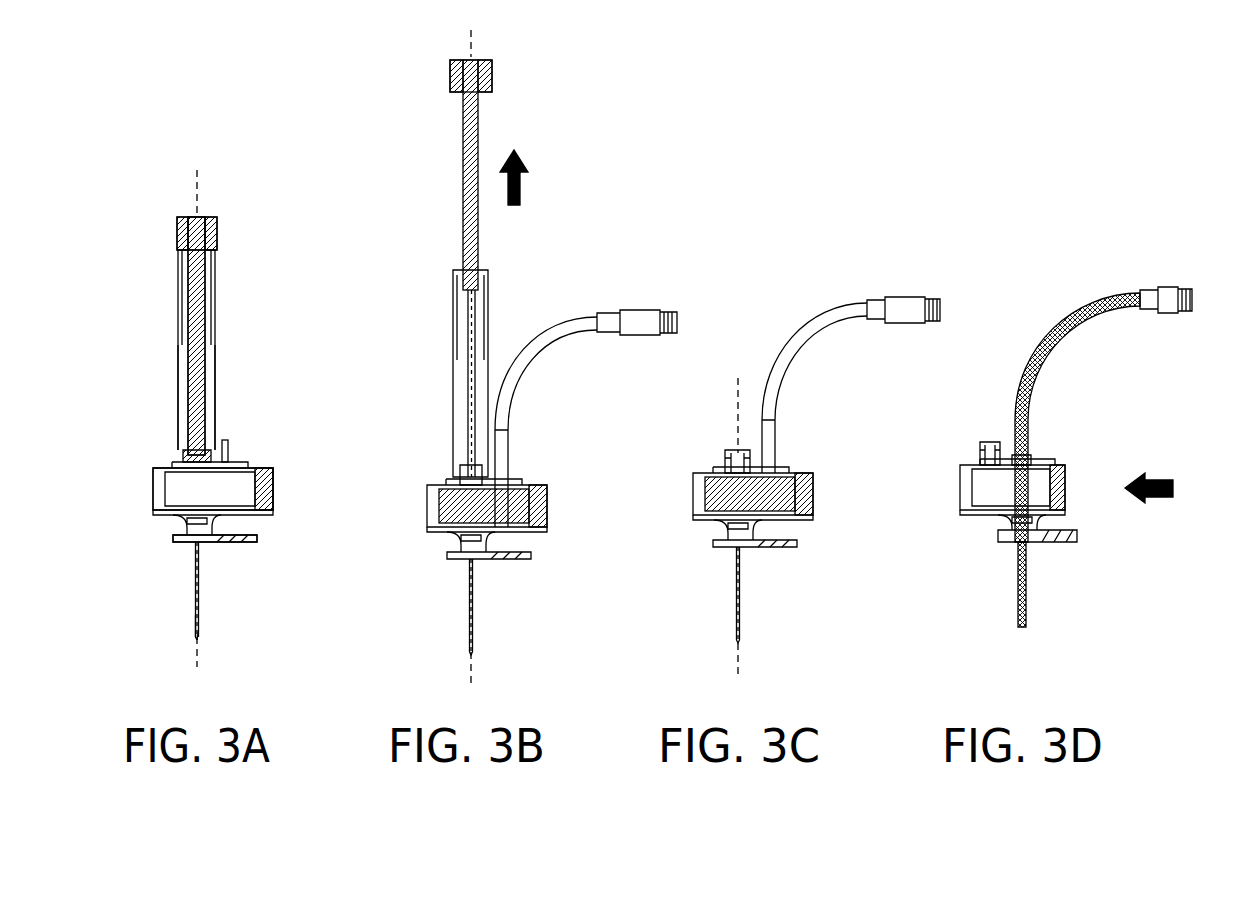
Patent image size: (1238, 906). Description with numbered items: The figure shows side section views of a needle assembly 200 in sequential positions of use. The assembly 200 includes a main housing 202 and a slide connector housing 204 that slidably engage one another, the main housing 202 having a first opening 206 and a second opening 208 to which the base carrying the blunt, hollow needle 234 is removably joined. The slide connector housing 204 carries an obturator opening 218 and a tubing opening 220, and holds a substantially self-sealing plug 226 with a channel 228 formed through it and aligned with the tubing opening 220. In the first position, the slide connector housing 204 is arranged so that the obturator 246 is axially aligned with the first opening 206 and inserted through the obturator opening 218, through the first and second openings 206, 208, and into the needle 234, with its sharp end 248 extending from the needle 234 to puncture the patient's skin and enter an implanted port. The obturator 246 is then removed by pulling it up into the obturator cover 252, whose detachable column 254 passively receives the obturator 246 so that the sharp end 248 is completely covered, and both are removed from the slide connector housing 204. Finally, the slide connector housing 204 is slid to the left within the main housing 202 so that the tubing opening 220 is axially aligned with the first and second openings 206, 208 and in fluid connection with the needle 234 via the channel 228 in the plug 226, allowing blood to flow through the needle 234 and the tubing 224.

In FIG. 3C, the needle assembly 200 is at (738, 108).
In FIG. 3A, the main housing 202 is at (273, 467).
In FIG. 3A, the slide connector housing 204 is at (235, 460).
In FIG. 3A, the first opening 206 is at (180, 452).
In FIG. 3A, the second opening 208 is at (183, 527).
In FIG. 3A, the obturator opening 218 is at (187, 445).
In FIG. 3B, the obturator opening 218 is at (470, 377).
In FIG. 3C, the obturator opening 218 is at (737, 461).
In FIG. 3D, the obturator opening 218 is at (993, 440).
In FIG. 3A, the tubing opening 220 is at (228, 440).
In FIG. 3D, the tubing opening 220 is at (1028, 455).
In FIG. 3D, the tubing 224 is at (1068, 305).
In FIG. 3A, the self-sealing plug 226 is at (255, 507).
In FIG. 3A, the channel 228 is at (197, 488).
In FIG. 3B, the channel 228 is at (487, 519).
In FIG. 3C, the channel 228 is at (753, 507).
In FIG. 3D, the channel 228 is at (1015, 495).
In FIG. 3A, the needle 234 is at (202, 573).
In FIG. 3B, the needle 234 is at (471, 607).
In FIG. 3C, the needle 234 is at (738, 595).
In FIG. 3D, the needle 234 is at (1028, 585).
In FIG. 3A, the obturator 246 is at (195, 623).
In FIG. 3A, the sharp end 248 is at (199, 637).
In FIG. 3A, the obturator cover 252 is at (196, 336).
In FIG. 3B, the obturator cover 252 is at (455, 290).
In FIG. 3B, the detachable column 254 is at (490, 330).
In FIG. 3C, the detachable column 254 is at (851, 385).